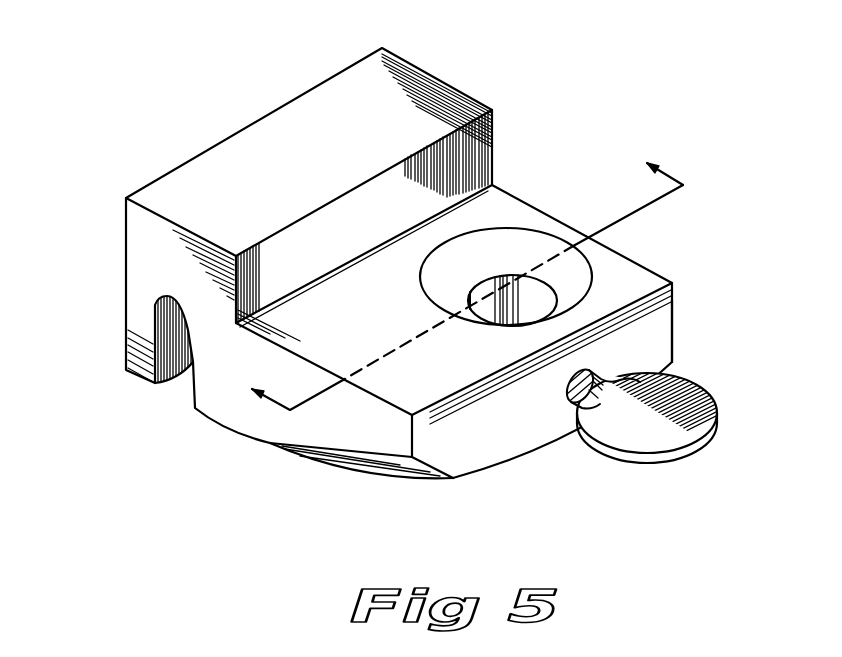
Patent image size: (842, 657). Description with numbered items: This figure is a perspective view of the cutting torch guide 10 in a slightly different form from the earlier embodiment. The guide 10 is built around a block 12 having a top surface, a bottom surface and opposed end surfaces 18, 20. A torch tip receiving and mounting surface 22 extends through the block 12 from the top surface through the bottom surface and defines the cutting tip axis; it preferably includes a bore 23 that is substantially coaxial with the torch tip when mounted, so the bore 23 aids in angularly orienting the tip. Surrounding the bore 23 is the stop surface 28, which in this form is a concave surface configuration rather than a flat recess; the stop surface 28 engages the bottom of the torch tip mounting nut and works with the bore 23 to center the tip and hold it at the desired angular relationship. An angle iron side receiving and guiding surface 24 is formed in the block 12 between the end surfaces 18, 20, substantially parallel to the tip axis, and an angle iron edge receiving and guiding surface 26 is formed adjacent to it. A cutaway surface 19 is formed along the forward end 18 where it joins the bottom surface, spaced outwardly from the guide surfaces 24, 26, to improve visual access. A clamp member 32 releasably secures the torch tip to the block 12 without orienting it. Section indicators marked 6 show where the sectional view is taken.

The cutting torch guide 10 is at (590, 63).
The block 12 is at (440, 70).
The end surface 18 is at (126, 257).
The cutaway surface 19 is at (367, 470).
The end surface 20 is at (673, 360).
The torch tip receiving and mounting surface 22 is at (610, 305).
The bore 23 is at (512, 327).
The angle iron side receiving and guiding surface 24 is at (176, 372).
The angle iron edge receiving and guiding surface 26 is at (167, 318).
The stop surface 28 is at (578, 275).
The clamp member 32 is at (647, 448).
The section line 6- 6 is at (613, 152).